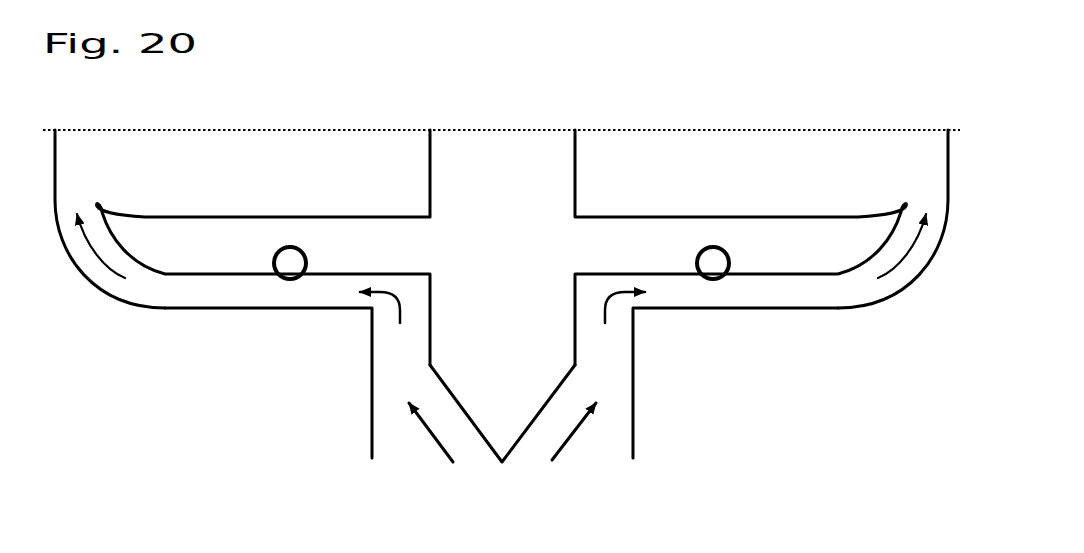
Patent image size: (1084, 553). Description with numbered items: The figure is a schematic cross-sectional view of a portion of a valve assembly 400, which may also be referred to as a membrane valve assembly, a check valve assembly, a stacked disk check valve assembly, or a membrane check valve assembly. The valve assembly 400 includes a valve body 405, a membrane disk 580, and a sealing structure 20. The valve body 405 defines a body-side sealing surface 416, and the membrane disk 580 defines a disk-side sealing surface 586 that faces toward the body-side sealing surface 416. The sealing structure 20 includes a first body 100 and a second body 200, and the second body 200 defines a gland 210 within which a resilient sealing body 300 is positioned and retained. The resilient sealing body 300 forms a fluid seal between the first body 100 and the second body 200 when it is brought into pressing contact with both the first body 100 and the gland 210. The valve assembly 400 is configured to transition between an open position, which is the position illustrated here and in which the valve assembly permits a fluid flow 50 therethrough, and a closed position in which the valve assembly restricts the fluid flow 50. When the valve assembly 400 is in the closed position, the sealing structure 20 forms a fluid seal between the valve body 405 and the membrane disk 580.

The valve assembly 400 is at (861, 92).
The body-side sealing surface 416 is at (106, 280).
The sealing structure 20 is at (184, 330).
The first body 100 is at (711, 345).
The valve body 405 is at (811, 322).
The membrane disk 580 is at (347, 212).
The disk-side sealing surface 586 is at (232, 278).
The second body 200 is at (792, 228).
The fluid flow 50 is at (554, 445).
The resilient sealing body 300 is at (292, 263).
The gland 210 is at (288, 247).